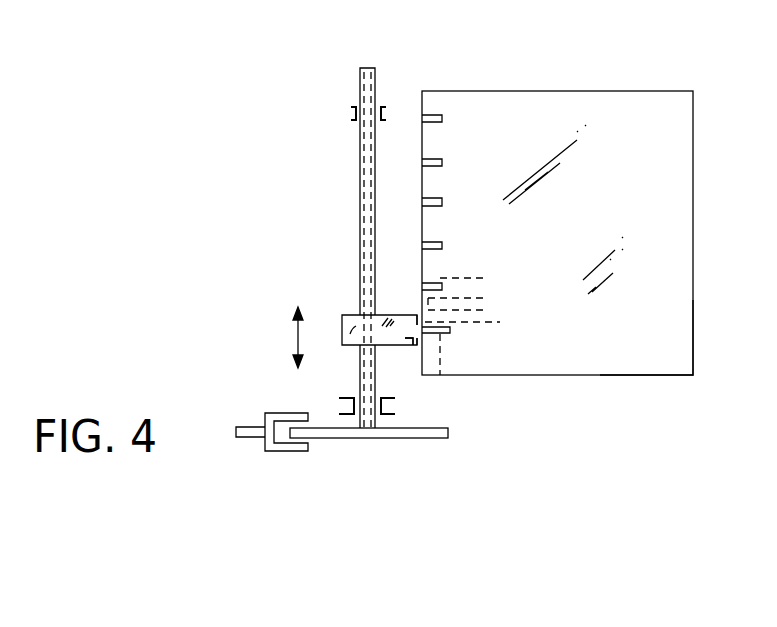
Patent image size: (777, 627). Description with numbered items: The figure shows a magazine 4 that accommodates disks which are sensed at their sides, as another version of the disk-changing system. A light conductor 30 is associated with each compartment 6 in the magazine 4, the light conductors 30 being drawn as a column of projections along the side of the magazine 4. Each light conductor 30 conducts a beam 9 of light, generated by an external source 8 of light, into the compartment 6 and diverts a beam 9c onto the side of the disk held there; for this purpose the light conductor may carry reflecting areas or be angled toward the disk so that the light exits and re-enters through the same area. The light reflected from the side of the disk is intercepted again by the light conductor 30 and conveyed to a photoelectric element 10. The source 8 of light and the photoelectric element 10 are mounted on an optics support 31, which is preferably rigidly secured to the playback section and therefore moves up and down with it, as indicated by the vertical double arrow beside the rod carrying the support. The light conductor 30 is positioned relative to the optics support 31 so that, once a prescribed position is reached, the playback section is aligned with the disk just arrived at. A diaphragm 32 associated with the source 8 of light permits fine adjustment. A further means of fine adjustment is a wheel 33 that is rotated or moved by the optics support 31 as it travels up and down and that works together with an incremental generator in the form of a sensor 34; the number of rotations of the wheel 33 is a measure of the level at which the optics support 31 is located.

The magazine 4 is at (547, 118).
The compartment 6 is at (490, 305).
The source of light 8 is at (413, 347).
The photoelectric element 10 is at (413, 347).
The beam of light 9 is at (411, 331).
The diverted beam 9c is at (452, 302).
The light conductor 30 is at (443, 116).
The optics support 31 is at (353, 326).
The diaphragm 32 is at (413, 328).
The wheel 33 is at (425, 436).
The sensor 34 is at (292, 450).